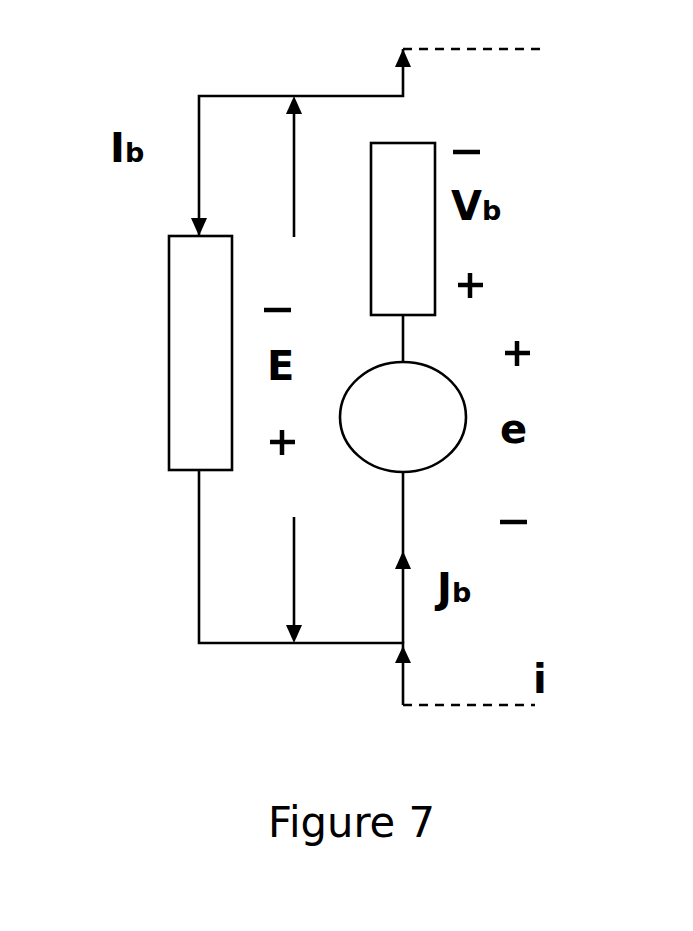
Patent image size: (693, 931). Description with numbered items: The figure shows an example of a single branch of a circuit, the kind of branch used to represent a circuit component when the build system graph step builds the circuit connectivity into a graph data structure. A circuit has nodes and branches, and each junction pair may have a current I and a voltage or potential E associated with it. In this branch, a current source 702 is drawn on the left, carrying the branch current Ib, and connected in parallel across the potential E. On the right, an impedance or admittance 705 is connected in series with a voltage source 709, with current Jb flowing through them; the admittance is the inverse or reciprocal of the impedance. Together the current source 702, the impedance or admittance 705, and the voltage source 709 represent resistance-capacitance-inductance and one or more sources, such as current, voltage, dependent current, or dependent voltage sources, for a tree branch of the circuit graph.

The current source 702 is at (173, 313).
The impedance or admittance 705 is at (549, 182).
The voltage source 709 is at (581, 446).